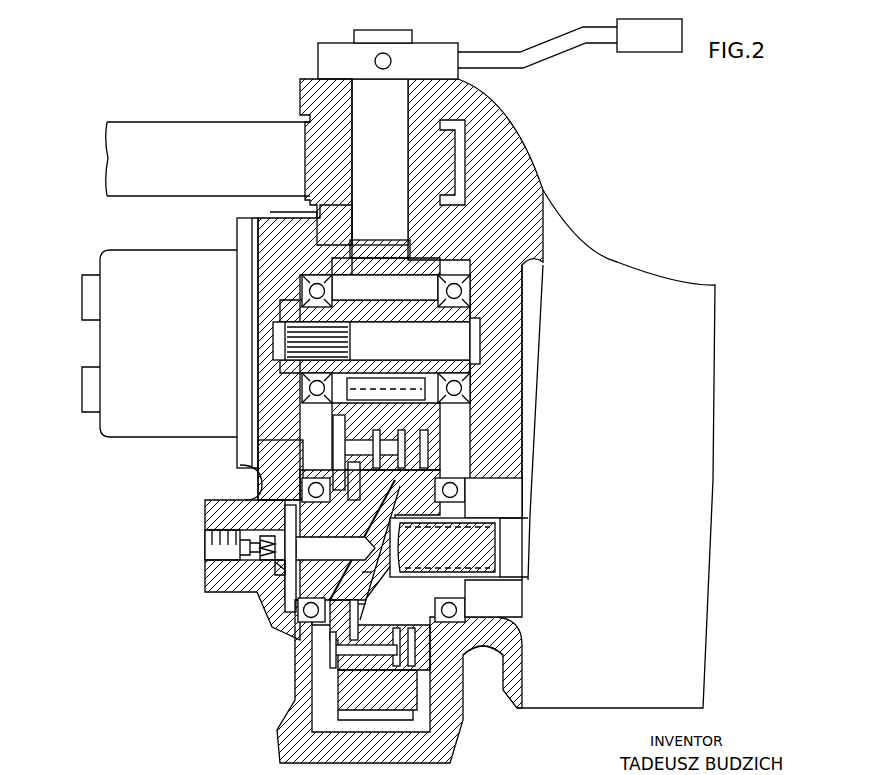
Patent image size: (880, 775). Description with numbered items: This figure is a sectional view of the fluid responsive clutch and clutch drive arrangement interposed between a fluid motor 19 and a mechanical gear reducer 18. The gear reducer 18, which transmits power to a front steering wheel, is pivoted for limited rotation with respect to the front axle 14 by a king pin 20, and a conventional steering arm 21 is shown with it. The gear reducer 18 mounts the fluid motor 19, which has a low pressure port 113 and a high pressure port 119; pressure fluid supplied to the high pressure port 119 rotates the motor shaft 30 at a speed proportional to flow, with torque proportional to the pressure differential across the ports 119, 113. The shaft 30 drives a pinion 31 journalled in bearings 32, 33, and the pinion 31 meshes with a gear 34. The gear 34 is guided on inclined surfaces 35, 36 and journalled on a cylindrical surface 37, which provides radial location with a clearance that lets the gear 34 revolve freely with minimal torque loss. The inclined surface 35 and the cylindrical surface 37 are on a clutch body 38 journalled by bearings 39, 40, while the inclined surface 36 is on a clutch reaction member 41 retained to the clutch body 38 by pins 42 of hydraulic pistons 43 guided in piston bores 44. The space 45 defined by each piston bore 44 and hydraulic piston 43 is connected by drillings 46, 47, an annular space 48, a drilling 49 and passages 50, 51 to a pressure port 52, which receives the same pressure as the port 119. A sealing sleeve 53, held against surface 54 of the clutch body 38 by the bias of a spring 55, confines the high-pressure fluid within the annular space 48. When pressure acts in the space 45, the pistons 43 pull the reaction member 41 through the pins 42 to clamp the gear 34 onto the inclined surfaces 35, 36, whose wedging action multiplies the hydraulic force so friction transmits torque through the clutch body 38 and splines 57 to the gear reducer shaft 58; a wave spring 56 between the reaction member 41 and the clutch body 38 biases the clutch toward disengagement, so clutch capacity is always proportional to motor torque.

The front axle 14 is at (210, 122).
The mechanical gear reducer 18 is at (523, 172).
The fluid motor 19 is at (170, 316).
The king pin 20 is at (391, 126).
The steering arm 21 is at (632, 52).
The shaft 30 is at (345, 337).
The pinion 31 is at (420, 284).
The bearing 32 is at (316, 278).
The bearing 33 is at (456, 282).
The gear 34 is at (396, 384).
The inclined surface 35 is at (425, 420).
The inclined surface 36 is at (326, 406).
The cylindrical surface 37 is at (345, 424).
The clutch body 38 is at (433, 490).
The bearing 39 is at (462, 500).
The bearing 40 is at (325, 476).
The clutch reaction member 41 is at (340, 680).
The pin 42 is at (340, 648).
The hydraulic piston 43 is at (396, 636).
The piston bore 44 is at (420, 668).
The space 45 is at (378, 675).
The drilling 46 is at (352, 582).
The drilling 47 is at (358, 557).
The annular space 48 is at (300, 548).
The drilling 49 is at (297, 586).
The passage 50 is at (258, 556).
The passage 51 is at (240, 545).
The pressure port 52 is at (208, 540).
The sealing sleeve 53 is at (296, 530).
The surface 54 is at (284, 584).
The spring 55 is at (270, 522).
The wave spring 56 is at (355, 616).
The splines 57 is at (473, 581).
The gear reducer shaft 58 is at (520, 540).
The low pressure port 113 is at (88, 282).
The high pressure port 119 is at (85, 378).